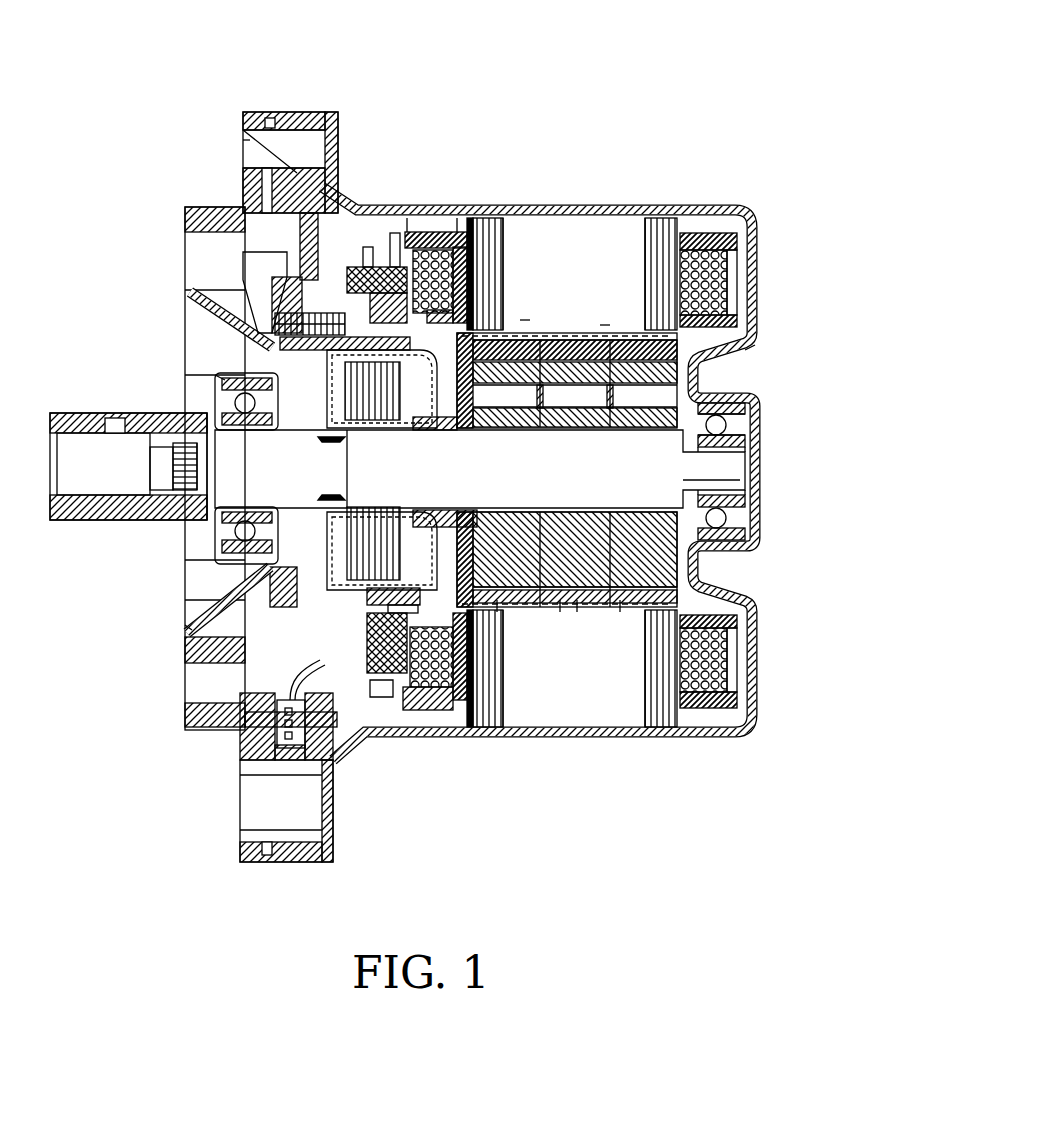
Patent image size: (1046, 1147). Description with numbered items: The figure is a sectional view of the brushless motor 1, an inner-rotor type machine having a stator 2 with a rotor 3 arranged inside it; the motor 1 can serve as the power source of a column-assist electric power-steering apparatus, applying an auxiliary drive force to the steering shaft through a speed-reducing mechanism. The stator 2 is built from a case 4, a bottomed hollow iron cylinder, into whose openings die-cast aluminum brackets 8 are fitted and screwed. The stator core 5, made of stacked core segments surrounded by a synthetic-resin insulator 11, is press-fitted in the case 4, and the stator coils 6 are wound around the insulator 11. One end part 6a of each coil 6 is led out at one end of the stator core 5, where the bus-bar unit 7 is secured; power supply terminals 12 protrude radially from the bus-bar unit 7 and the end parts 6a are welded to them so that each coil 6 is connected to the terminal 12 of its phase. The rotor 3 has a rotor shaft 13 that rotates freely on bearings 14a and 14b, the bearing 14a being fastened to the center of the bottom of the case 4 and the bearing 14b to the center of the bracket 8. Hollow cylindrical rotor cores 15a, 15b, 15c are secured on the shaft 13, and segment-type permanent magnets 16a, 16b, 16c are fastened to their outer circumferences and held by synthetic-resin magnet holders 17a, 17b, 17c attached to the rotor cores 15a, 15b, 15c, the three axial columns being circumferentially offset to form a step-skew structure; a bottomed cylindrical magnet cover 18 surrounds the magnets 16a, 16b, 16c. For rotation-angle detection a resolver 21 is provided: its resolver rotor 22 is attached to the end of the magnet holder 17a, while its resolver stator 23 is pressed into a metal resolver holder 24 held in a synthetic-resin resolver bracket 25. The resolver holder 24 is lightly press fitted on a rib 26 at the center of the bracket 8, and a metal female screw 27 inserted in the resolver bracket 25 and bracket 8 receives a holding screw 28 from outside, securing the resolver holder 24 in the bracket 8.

The brushless motor 1 is at (642, 130).
The stator 2 is at (680, 205).
The rotor 3 is at (690, 588).
The case 4 is at (545, 212).
The stator core 5 is at (588, 240).
The stator coils 6 is at (725, 278).
The end part of coil 6a is at (335, 240).
The bus-bar unit 7 is at (378, 245).
The bracket 8 is at (318, 112).
The insulator 11 is at (440, 712).
The power supply terminals 12 is at (432, 240).
The rotor shaft 13 is at (660, 480).
The bearing 14a is at (718, 425).
The bearing 14b is at (243, 531).
The rotor core 15a is at (497, 612).
The rotor core 15b is at (560, 612).
The rotor core 15c is at (690, 567).
The magnet 16a is at (510, 612).
The magnet 16b is at (577, 612).
The magnet 16c is at (718, 675).
The magnet holder 17a is at (527, 325).
The magnet holder 17b is at (605, 330).
The magnet holder 17c is at (750, 352).
The magnet cover 18 is at (620, 612).
The resolver 21 is at (243, 725).
The resolver rotor 22 is at (325, 600).
The resolver stator 23 is at (185, 625).
The resolver holder 24 is at (388, 700).
The resolver bracket 25 is at (280, 262).
The rib 26 is at (215, 375).
The female screw 27 is at (243, 110).
The holding screw 28 is at (270, 322).